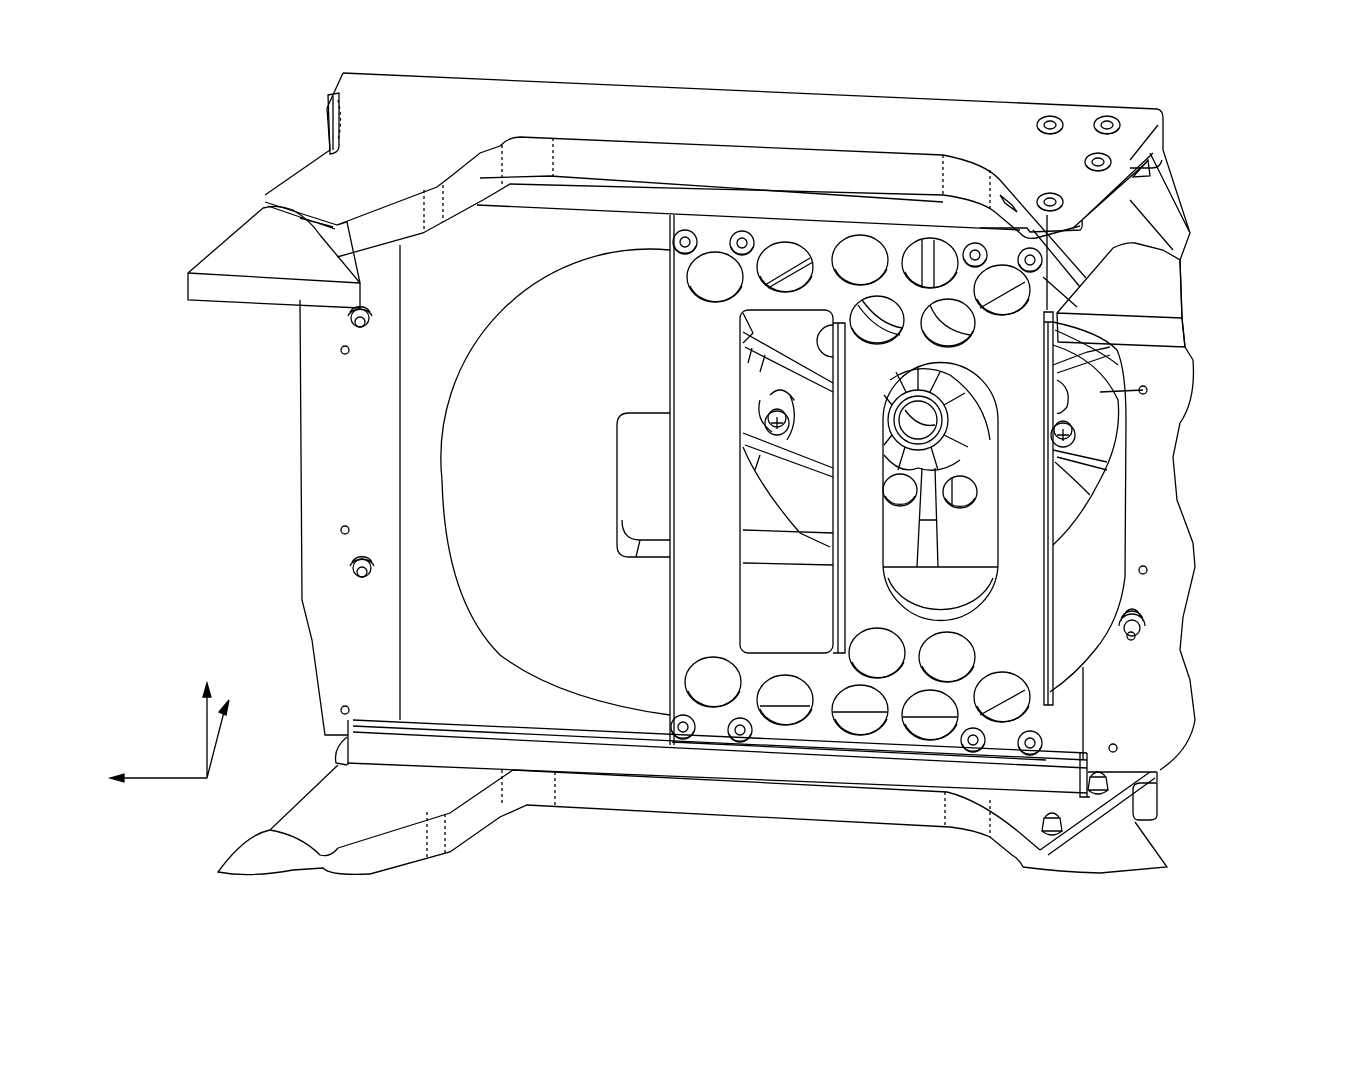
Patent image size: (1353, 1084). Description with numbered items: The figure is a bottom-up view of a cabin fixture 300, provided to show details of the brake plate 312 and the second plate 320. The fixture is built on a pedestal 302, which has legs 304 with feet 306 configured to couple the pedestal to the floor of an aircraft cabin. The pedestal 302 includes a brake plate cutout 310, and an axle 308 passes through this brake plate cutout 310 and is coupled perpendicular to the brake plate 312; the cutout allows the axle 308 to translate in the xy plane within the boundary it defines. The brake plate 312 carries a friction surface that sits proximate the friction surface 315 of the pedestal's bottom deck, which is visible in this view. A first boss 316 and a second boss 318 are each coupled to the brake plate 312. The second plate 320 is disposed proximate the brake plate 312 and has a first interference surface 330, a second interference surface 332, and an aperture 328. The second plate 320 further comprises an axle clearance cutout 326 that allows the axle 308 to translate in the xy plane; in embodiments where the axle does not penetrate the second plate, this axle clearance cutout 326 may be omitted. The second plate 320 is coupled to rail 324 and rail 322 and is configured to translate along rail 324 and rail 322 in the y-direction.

The cabin fixture 300 is at (1232, 157).
The pedestal 302 is at (1152, 672).
The legs 304 is at (311, 181).
The feet 306 is at (258, 295).
The axle 308 is at (960, 440).
The brake plate cutout 310 is at (664, 486).
The brake plate 312 is at (1143, 390).
The friction surface 315 is at (586, 522).
The first boss 316 is at (1087, 417).
The second boss 318 is at (790, 400).
The second plate 320 is at (680, 366).
The rail 322 is at (632, 762).
The rail 324 is at (640, 200).
The axle clearance cutout 326 is at (990, 570).
The aperture 328 is at (745, 622).
The first interference surface 330 is at (1045, 550).
The second interference surface 332 is at (838, 577).